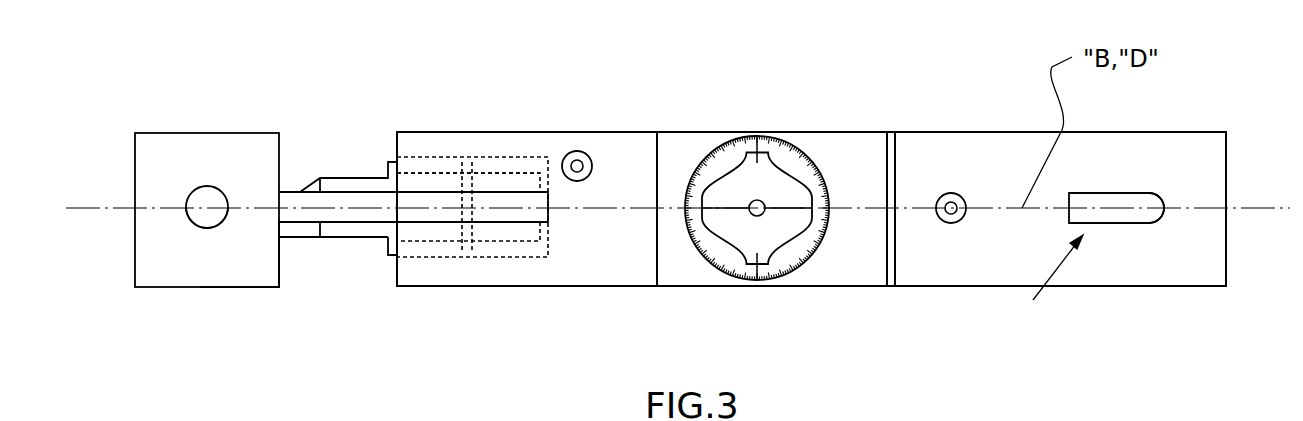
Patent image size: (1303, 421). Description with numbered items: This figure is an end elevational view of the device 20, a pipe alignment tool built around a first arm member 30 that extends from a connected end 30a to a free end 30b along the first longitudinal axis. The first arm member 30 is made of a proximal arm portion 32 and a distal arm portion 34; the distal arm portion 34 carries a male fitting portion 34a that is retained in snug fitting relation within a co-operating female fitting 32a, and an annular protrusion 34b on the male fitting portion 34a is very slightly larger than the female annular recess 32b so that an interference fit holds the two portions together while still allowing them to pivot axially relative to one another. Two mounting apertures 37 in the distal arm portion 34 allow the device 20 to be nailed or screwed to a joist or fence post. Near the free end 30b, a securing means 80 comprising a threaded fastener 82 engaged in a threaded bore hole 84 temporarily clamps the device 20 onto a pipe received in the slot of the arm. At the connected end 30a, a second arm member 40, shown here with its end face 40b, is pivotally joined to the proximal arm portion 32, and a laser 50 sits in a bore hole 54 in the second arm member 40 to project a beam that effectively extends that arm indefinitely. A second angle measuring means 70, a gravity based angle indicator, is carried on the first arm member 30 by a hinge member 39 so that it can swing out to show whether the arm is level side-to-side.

The device 20 is at (960, 57).
The first arm member 30 is at (960, 152).
The connected end 30a is at (285, 237).
The free end 30b is at (1227, 267).
The proximal arm portion 32 is at (347, 187).
The female fitting 32a is at (515, 173).
The female annular recess 32b is at (470, 160).
The distal arm portion 34 is at (617, 253).
The male fitting portion 34a is at (507, 230).
The annular protrusion 34b is at (465, 253).
The mounting apertures 37 is at (573, 150).
The hinge member 39 is at (892, 150).
The second arm member 40 is at (157, 257).
The block face 40b is at (237, 267).
The laser 50 is at (203, 198).
The bore hole 54 is at (207, 230).
The second angle measuring means 70 is at (848, 263).
The securing means 80 is at (1045, 286).
The threaded fastener 82 is at (1122, 217).
The threaded bore hole 84 is at (1163, 200).